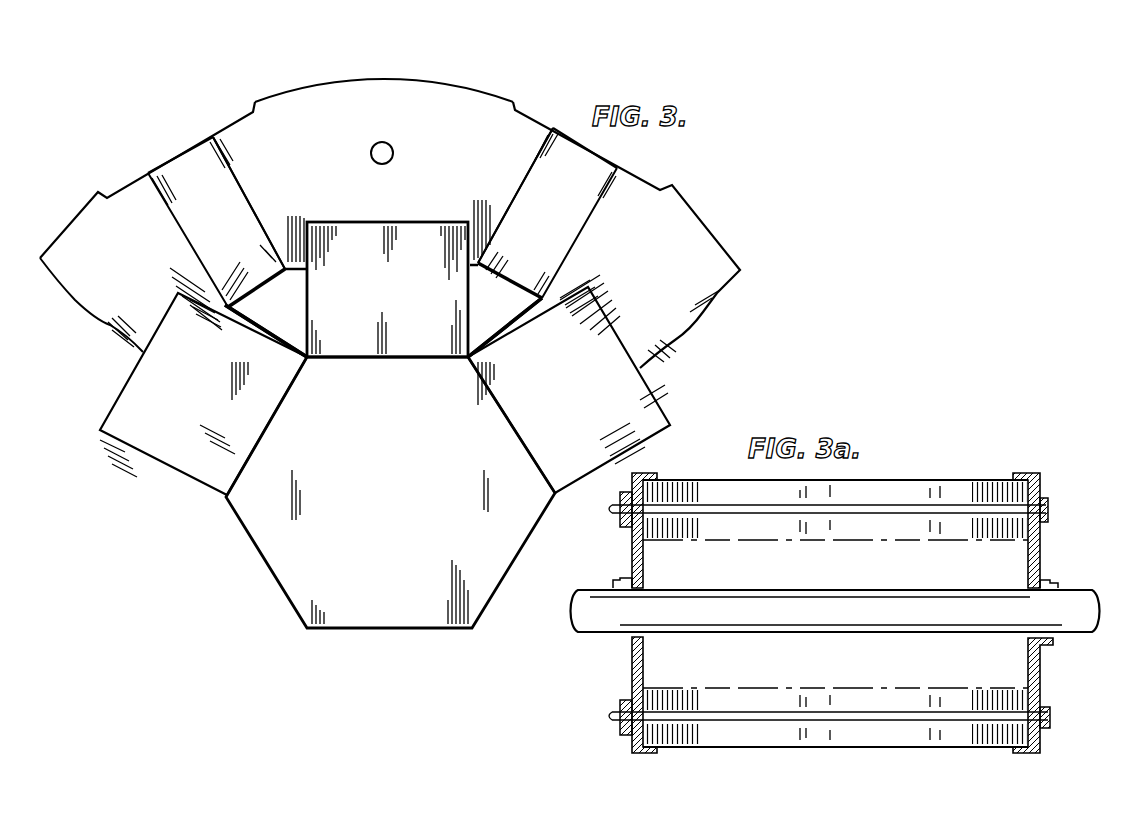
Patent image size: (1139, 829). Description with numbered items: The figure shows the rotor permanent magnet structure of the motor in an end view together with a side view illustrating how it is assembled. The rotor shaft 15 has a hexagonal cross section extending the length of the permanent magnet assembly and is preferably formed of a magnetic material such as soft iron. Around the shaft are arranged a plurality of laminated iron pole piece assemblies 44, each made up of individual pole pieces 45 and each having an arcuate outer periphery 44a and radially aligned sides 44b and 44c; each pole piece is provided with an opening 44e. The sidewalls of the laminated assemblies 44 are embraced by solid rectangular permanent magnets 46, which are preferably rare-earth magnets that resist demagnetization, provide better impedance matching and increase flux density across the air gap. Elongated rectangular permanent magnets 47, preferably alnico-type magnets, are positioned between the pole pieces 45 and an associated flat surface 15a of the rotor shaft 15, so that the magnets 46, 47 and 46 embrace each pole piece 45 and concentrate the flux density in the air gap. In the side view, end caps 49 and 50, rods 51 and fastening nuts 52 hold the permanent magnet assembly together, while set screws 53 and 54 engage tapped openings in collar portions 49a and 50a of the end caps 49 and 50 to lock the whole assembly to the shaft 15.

In FIG. 3, the rotor shaft 15 is at (403, 511).
In FIG. 3A, the rotor shaft 15 is at (848, 624).
In FIG. 3, the surface of rotor shaft 15a is at (382, 358).
In FIG. 3, the laminated iron pole piece assembly 44 is at (109, 182).
In FIG. 3, the arcuate outer surface 44a is at (368, 83).
In FIG. 3, the radially aligned side 44b is at (250, 201).
In FIG. 3, the radially aligned side 44c is at (517, 194).
In FIG. 3, the opening 44e is at (393, 152).
In FIG. 3, the pole piece 45 is at (403, 122).
In FIG. 3A, the pole piece 45 is at (1017, 541).
In FIG. 3, the permanent magnet 46 is at (230, 229).
In FIG. 3, the permanent magnet 47 is at (406, 296).
In FIG. 3A, the permanent magnet 47 is at (848, 579).
In FIG. 3A, the end cap 49 is at (632, 553).
In FIG. 3A, the collar portion 49a is at (626, 645).
In FIG. 3A, the end cap 50 is at (1040, 556).
In FIG. 3A, the collar portion 50a is at (1042, 648).
In FIG. 3A, the rod 51 is at (1051, 718).
In FIG. 3A, the fastening nut 52 is at (619, 528).
In FIG. 3A, the set screw 53 is at (614, 579).
In FIG. 3A, the set screw 54 is at (1051, 580).